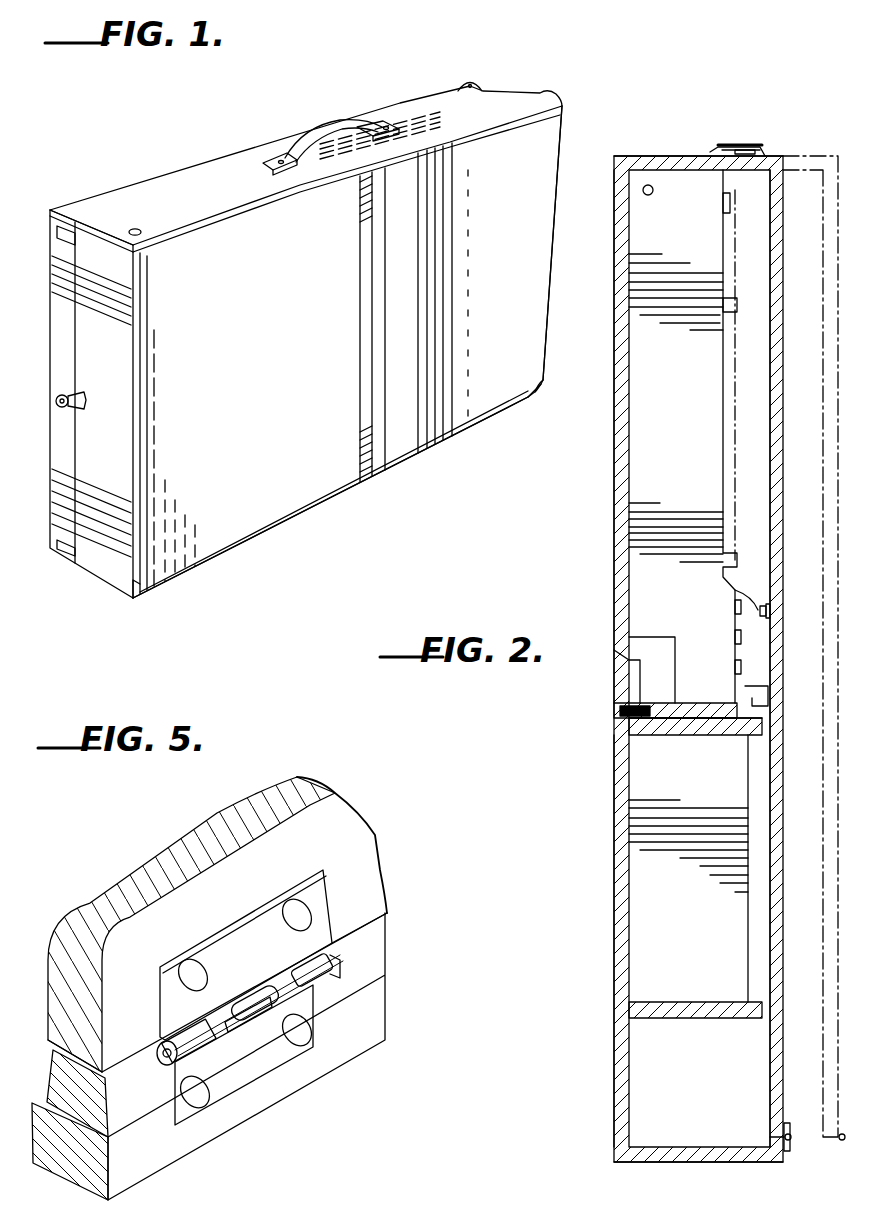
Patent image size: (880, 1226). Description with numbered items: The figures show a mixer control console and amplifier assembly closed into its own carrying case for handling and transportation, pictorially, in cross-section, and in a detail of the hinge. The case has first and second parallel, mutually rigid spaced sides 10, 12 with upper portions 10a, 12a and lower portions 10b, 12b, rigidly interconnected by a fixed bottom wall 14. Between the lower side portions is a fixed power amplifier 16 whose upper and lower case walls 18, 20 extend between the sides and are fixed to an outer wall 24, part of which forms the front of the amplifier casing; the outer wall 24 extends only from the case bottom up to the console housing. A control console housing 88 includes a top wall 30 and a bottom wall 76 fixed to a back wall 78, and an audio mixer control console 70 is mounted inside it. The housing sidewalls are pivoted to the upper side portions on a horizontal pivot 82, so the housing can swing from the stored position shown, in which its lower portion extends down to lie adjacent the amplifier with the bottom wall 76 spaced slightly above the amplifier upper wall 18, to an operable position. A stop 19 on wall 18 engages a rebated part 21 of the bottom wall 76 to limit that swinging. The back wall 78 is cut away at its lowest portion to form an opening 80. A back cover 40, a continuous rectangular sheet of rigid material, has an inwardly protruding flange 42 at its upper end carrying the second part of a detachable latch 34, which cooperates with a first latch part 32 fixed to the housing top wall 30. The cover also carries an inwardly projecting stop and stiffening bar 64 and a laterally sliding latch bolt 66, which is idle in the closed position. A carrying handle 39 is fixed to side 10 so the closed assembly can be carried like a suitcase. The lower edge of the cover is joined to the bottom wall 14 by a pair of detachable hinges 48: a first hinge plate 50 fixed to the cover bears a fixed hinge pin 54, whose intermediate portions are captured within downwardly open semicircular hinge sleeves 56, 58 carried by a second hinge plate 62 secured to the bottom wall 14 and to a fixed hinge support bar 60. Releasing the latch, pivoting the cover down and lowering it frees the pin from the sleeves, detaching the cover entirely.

In FIG. 1, the first side 10 is at (212, 166).
In FIG. 1, the upper portion of first side 10a is at (90, 202).
In FIG. 1, the lower portion of first side 10b is at (498, 97).
In FIG. 1, the second side 12 is at (273, 527).
In FIG. 1, the upper portion of second side 12a is at (143, 601).
In FIG. 1, the lower portion of second side 12b is at (521, 406).
In FIG. 1, the bottom wall 14 is at (553, 253).
In FIG. 2, the bottom wall 14 is at (685, 1163).
In FIG. 5, the bottom wall 14 is at (352, 1060).
In FIG. 2, the power amplifier 16 is at (686, 913).
In FIG. 2, the upper case wall of amplifier 18 is at (651, 736).
In FIG. 2, the stop 19 is at (618, 713).
In FIG. 2, the lower case wall of amplifier 20 is at (690, 1002).
In FIG. 2, the rebated part 21 is at (642, 710).
In FIG. 1, the outer wall 24 is at (498, 276).
In FIG. 2, the outer wall 24 is at (614, 916).
In FIG. 1, the housing top wall 30 is at (116, 460).
In FIG. 2, the housing top wall 30 is at (660, 157).
In FIG. 2, the first latch part 32 is at (706, 150).
In FIG. 1, the detachable latch 34 is at (60, 392).
In FIG. 2, the detachable latch 34 is at (740, 146).
In FIG. 1, the carrying handle 39 is at (333, 120).
In FIG. 2, the back cover 40 is at (822, 382).
In FIG. 5, the back cover 40 is at (370, 823).
In FIG. 2, the flange 42 is at (745, 163).
In FIG. 2, the detachable hinge 48 is at (792, 1142).
In FIG. 5, the detachable hinge 48 is at (345, 919).
In FIG. 5, the first hinge plate 50 is at (232, 936).
In FIG. 5, the hinge pin 54 is at (160, 1050).
In FIG. 5, the hinge sleeve 56 is at (187, 1027).
In FIG. 5, the hinge sleeve 58 is at (300, 968).
In FIG. 5, the hinge support bar 60 is at (144, 1102).
In FIG. 5, the second hinge plate 62 is at (262, 1085).
In FIG. 2, the stop and stiffening bar 64 is at (746, 694).
In FIG. 2, the latch bolt 66 is at (730, 593).
In FIG. 2, the audio mixer control console 70 is at (736, 299).
In FIG. 2, the housing bottom wall 76 is at (706, 722).
In FIG. 1, the housing back wall 78 is at (266, 370).
In FIG. 2, the housing back wall 78 is at (618, 511).
In FIG. 1, the opening 80 is at (368, 256).
In FIG. 2, the opening 80 is at (640, 686).
In FIG. 1, the pivot 82 is at (140, 229).
In FIG. 2, the pivot 82 is at (648, 197).
In FIG. 2, the control console housing 88 is at (686, 473).